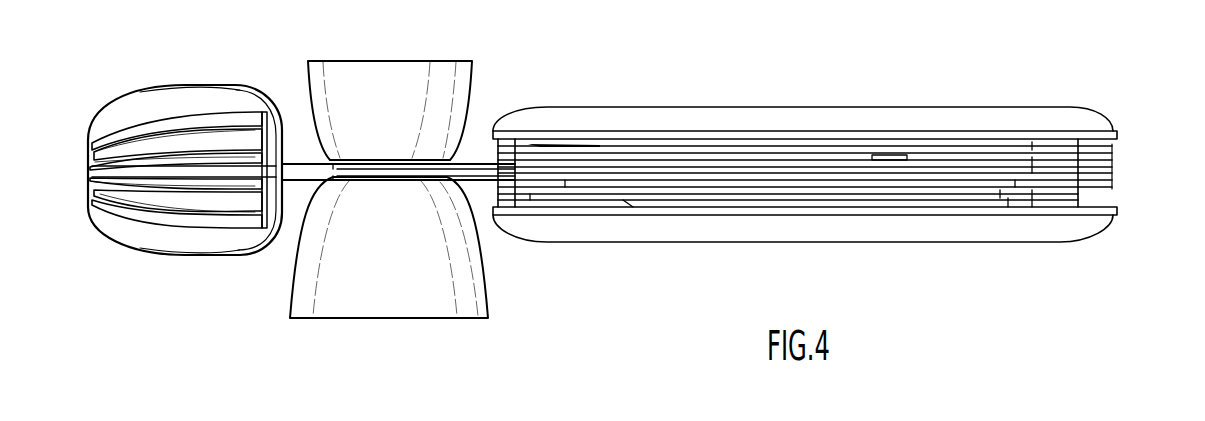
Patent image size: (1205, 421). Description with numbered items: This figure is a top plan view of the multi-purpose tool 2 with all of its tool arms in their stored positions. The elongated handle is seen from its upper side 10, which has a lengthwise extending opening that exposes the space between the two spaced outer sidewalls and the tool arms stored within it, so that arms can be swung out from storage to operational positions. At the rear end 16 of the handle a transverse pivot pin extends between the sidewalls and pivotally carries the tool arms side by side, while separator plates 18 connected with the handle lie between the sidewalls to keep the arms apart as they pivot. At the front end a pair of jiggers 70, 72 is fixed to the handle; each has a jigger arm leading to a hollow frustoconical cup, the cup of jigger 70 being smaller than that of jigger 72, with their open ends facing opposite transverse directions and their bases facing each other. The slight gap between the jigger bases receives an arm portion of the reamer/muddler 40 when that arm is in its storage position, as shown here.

The multi-purpose tool 2 is at (946, 75).
The upper side 10 is at (787, 175).
The rear end 16 is at (1117, 136).
The separator plates 18 is at (1112, 177).
The reamer/muddler 40 is at (157, 107).
The jigger 70 is at (398, 72).
The jigger 72 is at (372, 300).